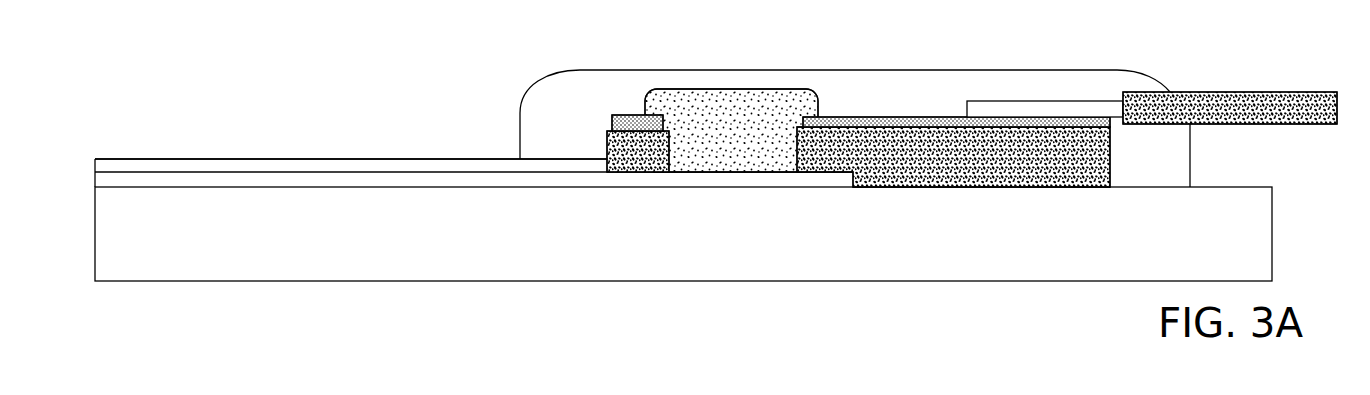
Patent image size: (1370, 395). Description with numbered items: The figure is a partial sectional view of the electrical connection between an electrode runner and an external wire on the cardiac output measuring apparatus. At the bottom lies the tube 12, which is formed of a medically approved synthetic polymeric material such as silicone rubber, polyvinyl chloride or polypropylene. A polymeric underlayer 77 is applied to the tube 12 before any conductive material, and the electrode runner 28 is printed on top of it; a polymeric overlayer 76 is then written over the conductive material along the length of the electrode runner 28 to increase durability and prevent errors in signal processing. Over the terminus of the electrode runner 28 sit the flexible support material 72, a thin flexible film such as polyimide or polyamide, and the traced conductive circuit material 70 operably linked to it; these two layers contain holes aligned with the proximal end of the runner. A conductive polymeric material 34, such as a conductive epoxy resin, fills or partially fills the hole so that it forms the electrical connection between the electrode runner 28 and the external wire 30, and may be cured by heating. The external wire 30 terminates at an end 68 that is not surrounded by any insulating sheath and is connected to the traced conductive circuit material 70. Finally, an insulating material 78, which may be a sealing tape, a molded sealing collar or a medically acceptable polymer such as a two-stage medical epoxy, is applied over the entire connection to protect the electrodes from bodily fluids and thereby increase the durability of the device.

The tube 12 is at (301, 272).
The electrode runner 28 is at (298, 178).
The external wire 30 is at (1219, 91).
The conductive polymeric material 34 is at (707, 89).
The end 68 is at (1033, 100).
The traced conductive circuit material 70 is at (860, 117).
The flexible support material 72 is at (1034, 188).
The polymeric overlayer 76 is at (155, 167).
The polymeric underlayer 77 is at (215, 188).
The insulating material 78 is at (535, 92).